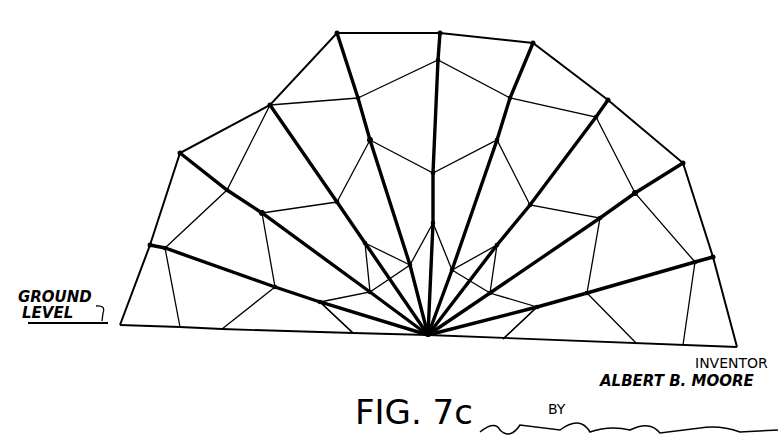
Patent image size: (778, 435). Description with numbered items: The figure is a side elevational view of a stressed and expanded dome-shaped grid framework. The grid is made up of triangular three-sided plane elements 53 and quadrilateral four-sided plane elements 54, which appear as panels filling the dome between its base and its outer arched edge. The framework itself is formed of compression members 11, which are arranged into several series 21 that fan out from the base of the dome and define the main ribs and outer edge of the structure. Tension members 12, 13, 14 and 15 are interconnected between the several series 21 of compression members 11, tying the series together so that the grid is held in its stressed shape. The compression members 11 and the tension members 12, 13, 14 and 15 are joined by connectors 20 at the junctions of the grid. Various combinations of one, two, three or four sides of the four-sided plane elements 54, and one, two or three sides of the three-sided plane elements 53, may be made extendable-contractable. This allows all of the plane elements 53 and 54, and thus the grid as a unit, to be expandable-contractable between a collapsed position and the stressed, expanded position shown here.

The series 21 is at (335, 32).
The compression member 11 is at (341, 153).
The four-sided plane figure 54 is at (502, 76).
The connector 20 is at (371, 138).
The three-sided plane figure 53 is at (493, 270).
The tension member 12 is at (335, 318).
The tension member 13 is at (252, 329).
The tension member 14 is at (192, 325).
The tension member 15 is at (140, 324).